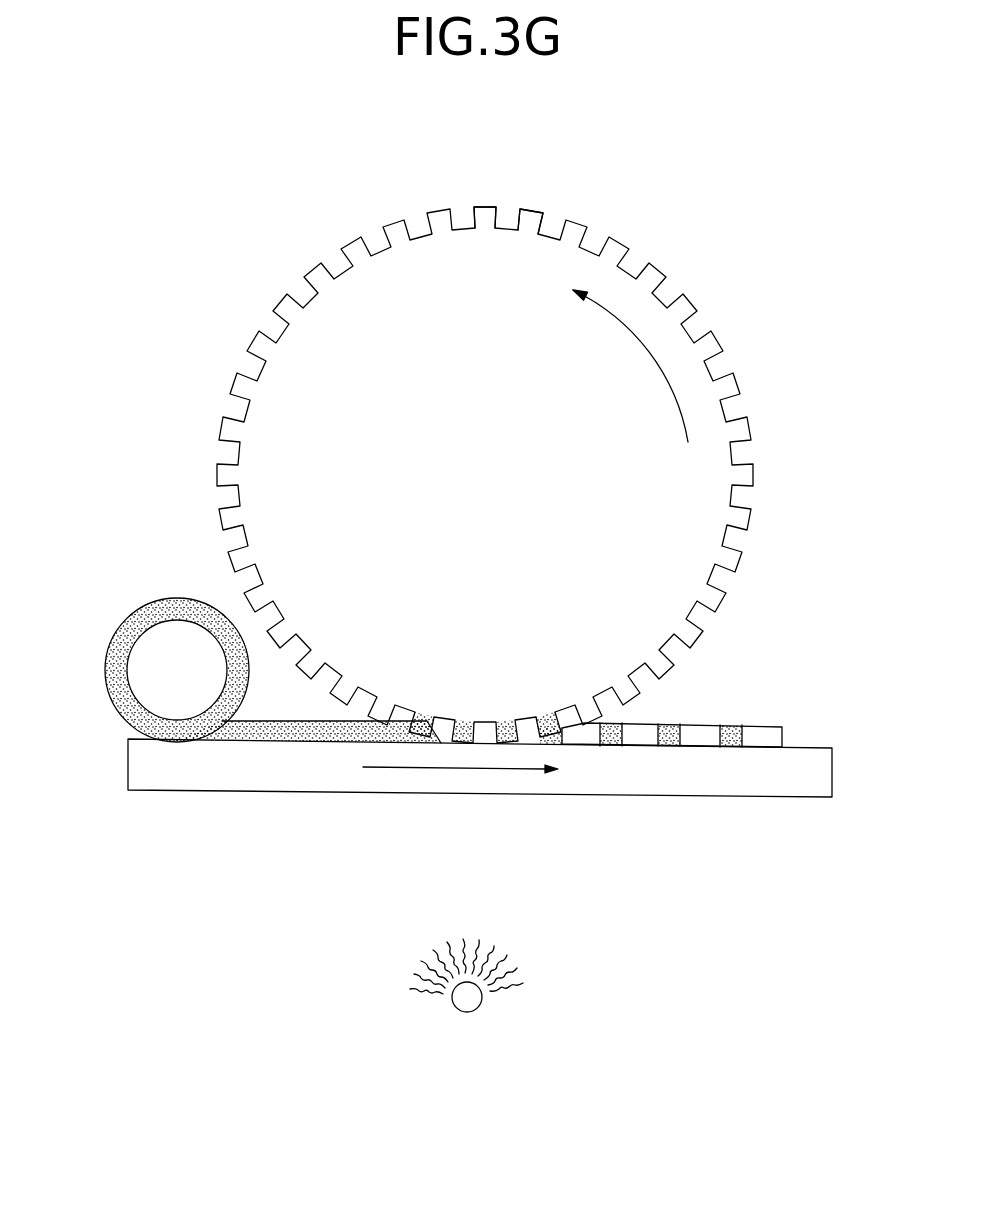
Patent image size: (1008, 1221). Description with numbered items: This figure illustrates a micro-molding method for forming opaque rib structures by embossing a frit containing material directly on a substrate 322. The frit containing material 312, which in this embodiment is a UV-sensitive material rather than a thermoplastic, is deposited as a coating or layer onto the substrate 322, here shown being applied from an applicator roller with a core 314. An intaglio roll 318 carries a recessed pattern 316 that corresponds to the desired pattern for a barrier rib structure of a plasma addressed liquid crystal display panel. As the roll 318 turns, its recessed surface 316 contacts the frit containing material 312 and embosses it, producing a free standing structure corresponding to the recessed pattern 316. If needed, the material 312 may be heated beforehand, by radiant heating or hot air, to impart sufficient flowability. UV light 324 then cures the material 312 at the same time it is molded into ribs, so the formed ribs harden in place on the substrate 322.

The UV-sensitive frit containing material 312 is at (154, 670).
The roller core 314 is at (190, 680).
The recessed pattern 316 is at (548, 225).
The intaglio roll 318 is at (485, 428).
The substrate 322 is at (820, 748).
The UV light 324 is at (460, 1000).